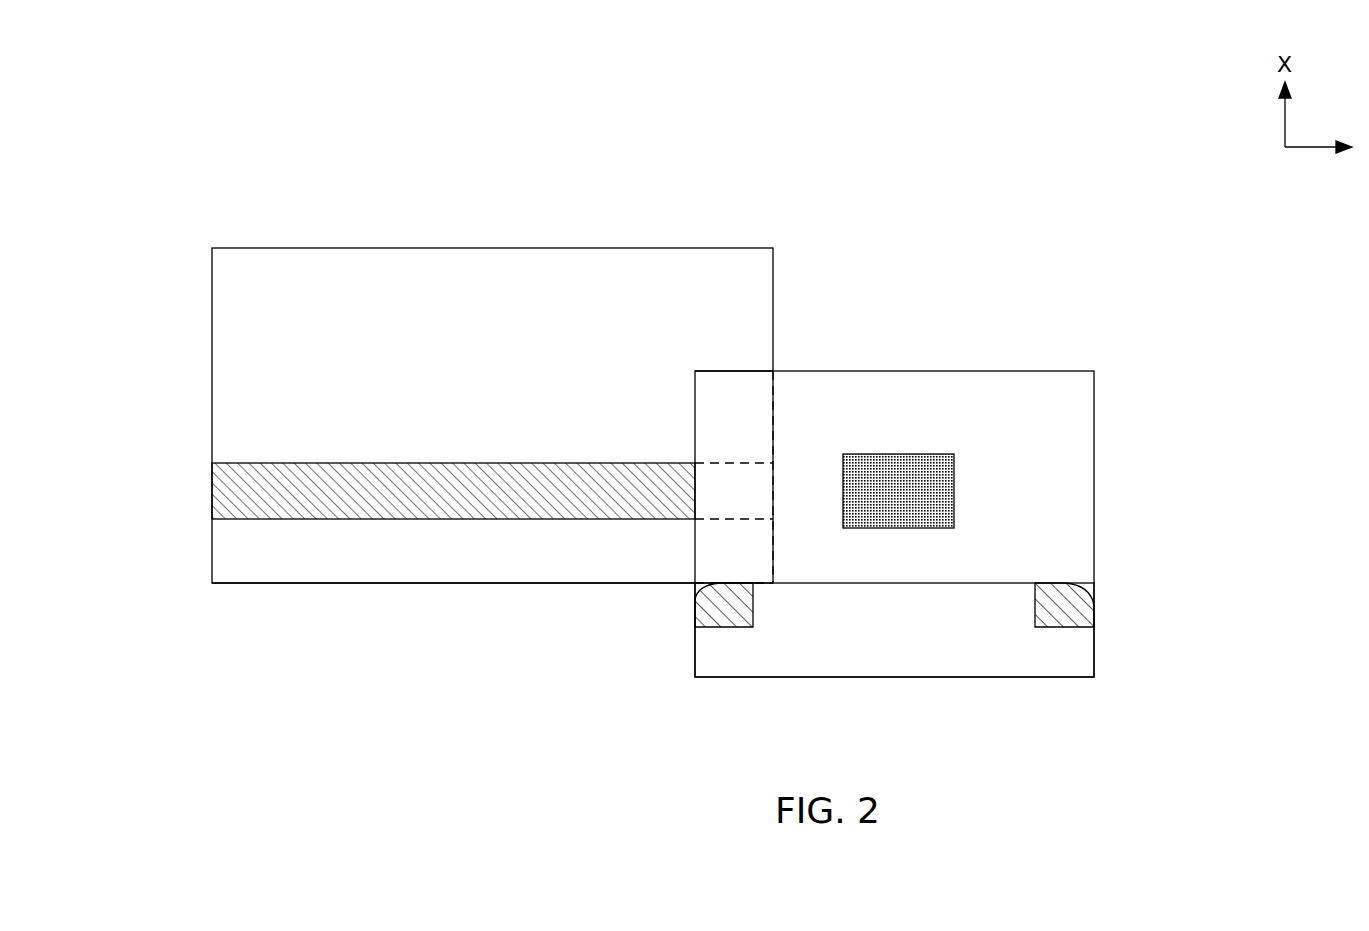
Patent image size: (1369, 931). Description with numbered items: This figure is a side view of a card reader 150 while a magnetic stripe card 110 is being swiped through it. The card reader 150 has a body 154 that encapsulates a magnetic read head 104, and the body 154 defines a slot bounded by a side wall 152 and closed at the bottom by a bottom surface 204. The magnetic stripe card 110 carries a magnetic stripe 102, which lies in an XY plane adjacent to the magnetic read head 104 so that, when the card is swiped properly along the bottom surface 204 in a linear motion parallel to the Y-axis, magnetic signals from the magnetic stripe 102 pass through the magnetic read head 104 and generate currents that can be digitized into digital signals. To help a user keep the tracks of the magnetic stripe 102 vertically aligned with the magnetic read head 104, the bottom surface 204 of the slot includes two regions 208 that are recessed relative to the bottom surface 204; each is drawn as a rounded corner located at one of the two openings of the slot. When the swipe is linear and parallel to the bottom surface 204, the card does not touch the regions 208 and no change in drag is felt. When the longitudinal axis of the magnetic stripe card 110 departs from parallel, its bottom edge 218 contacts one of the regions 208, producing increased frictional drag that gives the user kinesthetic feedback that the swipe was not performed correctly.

The magnetic stripe card 110 is at (293, 248).
The magnetic stripe 102 is at (250, 518).
The bottom edge 218 is at (477, 587).
The side wall 152 is at (825, 380).
The magnetic read head 104 is at (877, 454).
The body 154 is at (1048, 371).
The card reader 150 is at (928, 498).
The regions 208 is at (712, 601).
The bottom surface 204 is at (900, 585).